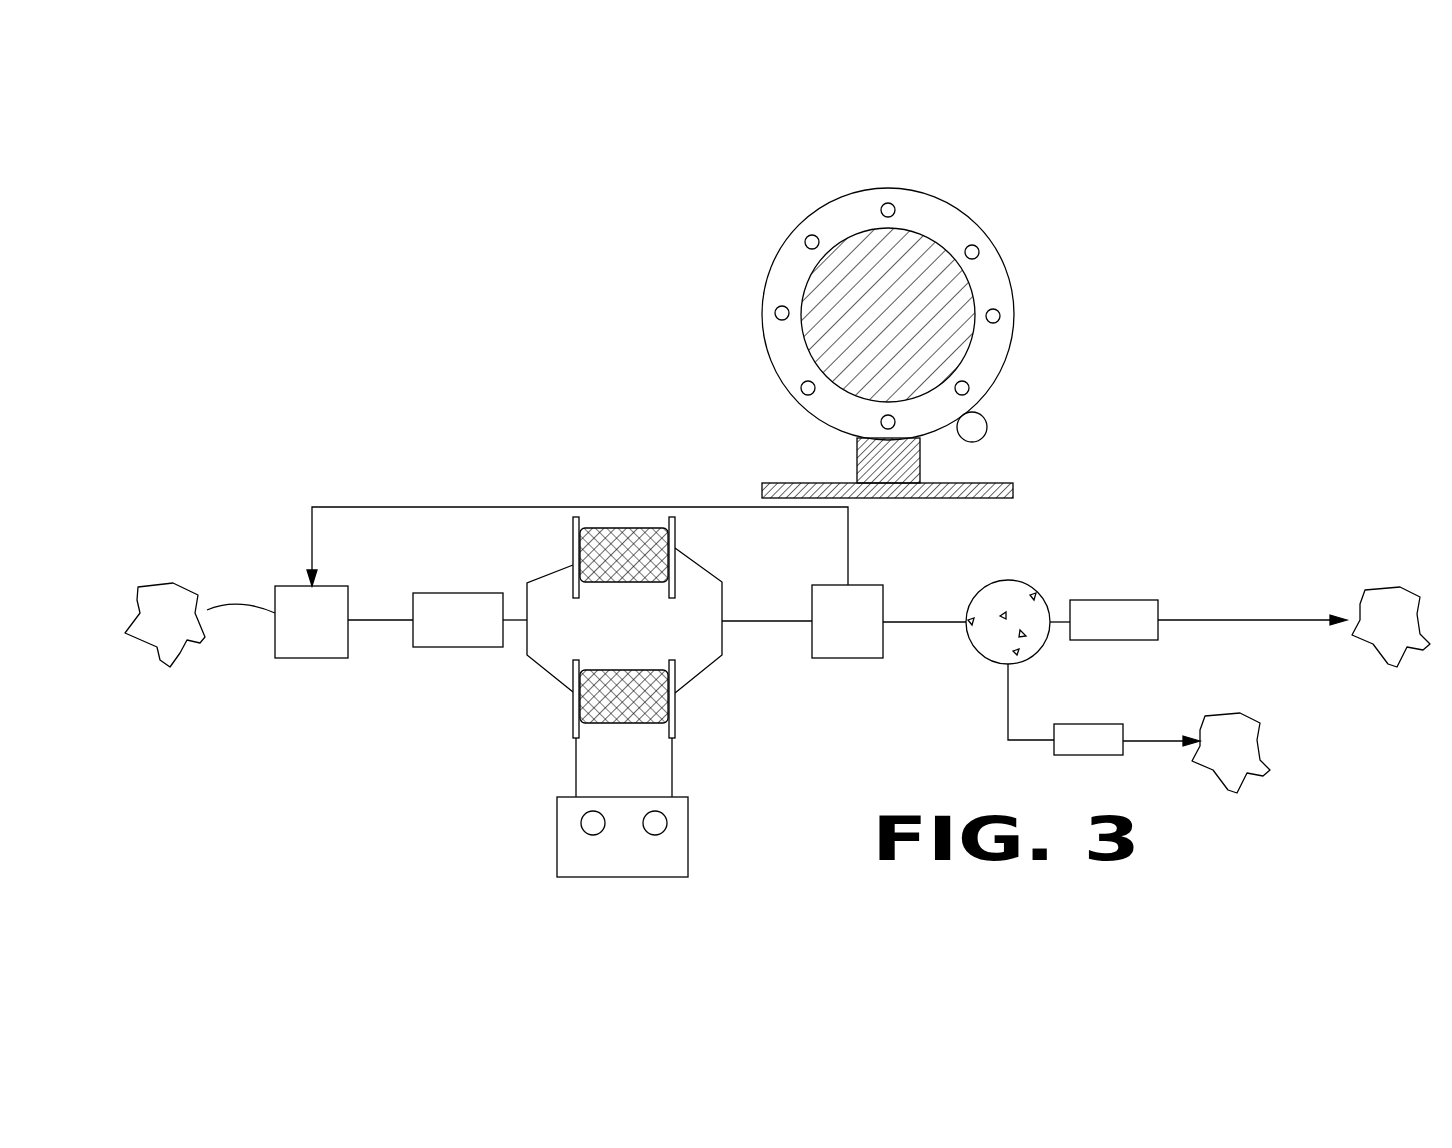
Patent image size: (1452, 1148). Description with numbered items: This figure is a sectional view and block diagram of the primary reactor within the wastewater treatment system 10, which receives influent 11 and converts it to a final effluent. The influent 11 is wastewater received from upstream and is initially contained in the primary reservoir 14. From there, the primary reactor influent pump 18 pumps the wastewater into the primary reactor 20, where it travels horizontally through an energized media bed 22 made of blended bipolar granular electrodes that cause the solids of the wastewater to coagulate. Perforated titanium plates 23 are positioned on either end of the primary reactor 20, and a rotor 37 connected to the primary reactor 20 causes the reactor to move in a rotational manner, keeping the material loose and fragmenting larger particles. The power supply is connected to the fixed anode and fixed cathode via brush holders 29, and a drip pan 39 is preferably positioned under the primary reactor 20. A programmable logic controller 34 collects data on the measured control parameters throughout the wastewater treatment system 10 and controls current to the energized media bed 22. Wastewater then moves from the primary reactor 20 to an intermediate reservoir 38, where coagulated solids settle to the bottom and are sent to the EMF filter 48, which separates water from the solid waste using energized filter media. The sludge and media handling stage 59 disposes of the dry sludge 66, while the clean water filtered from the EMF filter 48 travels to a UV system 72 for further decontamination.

The wastewater treatment system 10 is at (513, 412).
The influent 11 is at (185, 637).
The primary reservoir 14 is at (328, 602).
The primary reactor influent pump 18 is at (438, 620).
The primary reactor 20 is at (768, 218).
The energized media bed 22 is at (597, 538).
The perforated titanium plates 23 is at (796, 318).
The brush holders 29 is at (905, 470).
The programmable logic controller 34 is at (688, 830).
The rotor 37 is at (931, 274).
The intermediate reservoir 38 is at (838, 659).
The drip pan 39 is at (997, 488).
The EMF filter 48 is at (988, 583).
The sludge and media handling stage 59 is at (1102, 598).
The dry sludge 66 is at (1416, 638).
The UV system 72 is at (1215, 758).